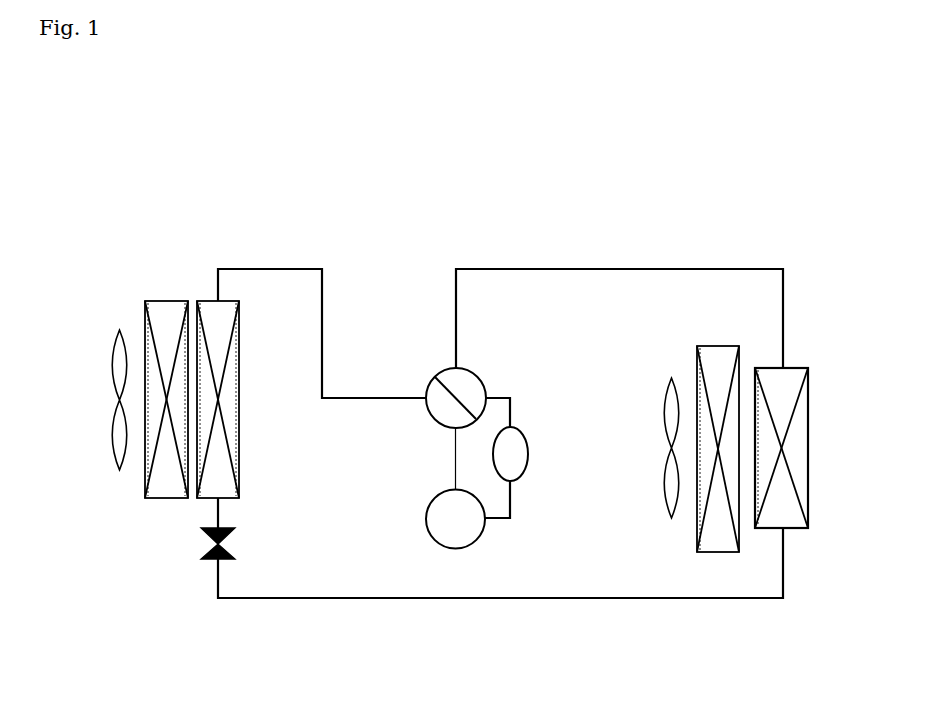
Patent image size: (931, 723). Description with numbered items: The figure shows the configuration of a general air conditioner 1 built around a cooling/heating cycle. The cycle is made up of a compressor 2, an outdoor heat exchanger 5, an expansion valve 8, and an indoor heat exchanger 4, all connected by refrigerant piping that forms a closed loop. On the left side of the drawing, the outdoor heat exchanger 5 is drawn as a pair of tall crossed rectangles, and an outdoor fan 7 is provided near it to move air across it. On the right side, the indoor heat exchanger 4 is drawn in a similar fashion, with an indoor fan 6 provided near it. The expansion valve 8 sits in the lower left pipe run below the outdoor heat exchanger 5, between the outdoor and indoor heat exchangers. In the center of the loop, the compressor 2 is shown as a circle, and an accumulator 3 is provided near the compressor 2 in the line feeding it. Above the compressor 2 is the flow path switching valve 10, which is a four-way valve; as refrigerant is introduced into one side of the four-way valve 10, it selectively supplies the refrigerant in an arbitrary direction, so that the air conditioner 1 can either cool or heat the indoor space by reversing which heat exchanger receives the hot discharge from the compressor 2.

The air conditioner 1 is at (196, 124).
The compressor 2 is at (458, 549).
The accumulator 3 is at (515, 481).
The indoor heat exchanger 4 is at (808, 448).
The outdoor heat exchanger 5 is at (205, 300).
The indoor fan 6 is at (666, 337).
The outdoor fan 7 is at (110, 288).
The expansion valve 8 is at (212, 560).
The flow path switching valve 10 is at (447, 368).